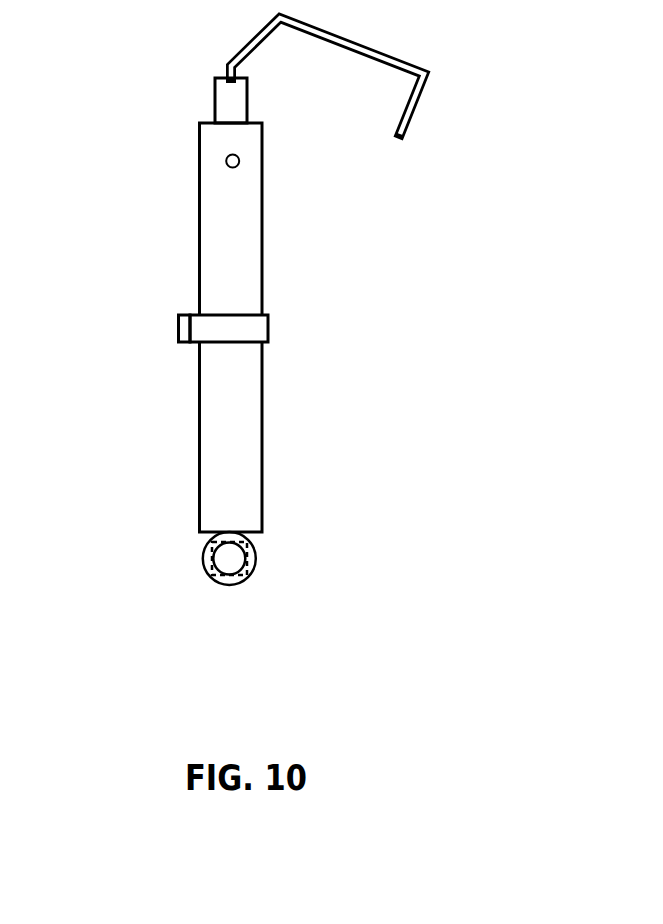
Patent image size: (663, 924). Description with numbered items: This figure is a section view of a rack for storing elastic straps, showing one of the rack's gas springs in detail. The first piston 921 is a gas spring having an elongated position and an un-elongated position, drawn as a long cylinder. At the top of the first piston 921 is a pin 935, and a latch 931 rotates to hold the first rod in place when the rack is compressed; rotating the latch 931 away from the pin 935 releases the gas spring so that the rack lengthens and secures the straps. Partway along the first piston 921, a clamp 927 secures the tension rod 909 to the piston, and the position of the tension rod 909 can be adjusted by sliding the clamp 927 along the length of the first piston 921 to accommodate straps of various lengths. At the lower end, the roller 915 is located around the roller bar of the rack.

The latch 931 is at (428, 73).
The pin 935 is at (226, 160).
The tension rod 909 is at (183, 315).
The clamp 927 is at (268, 328).
The first piston 921 is at (262, 478).
The roller 915 is at (256, 558).